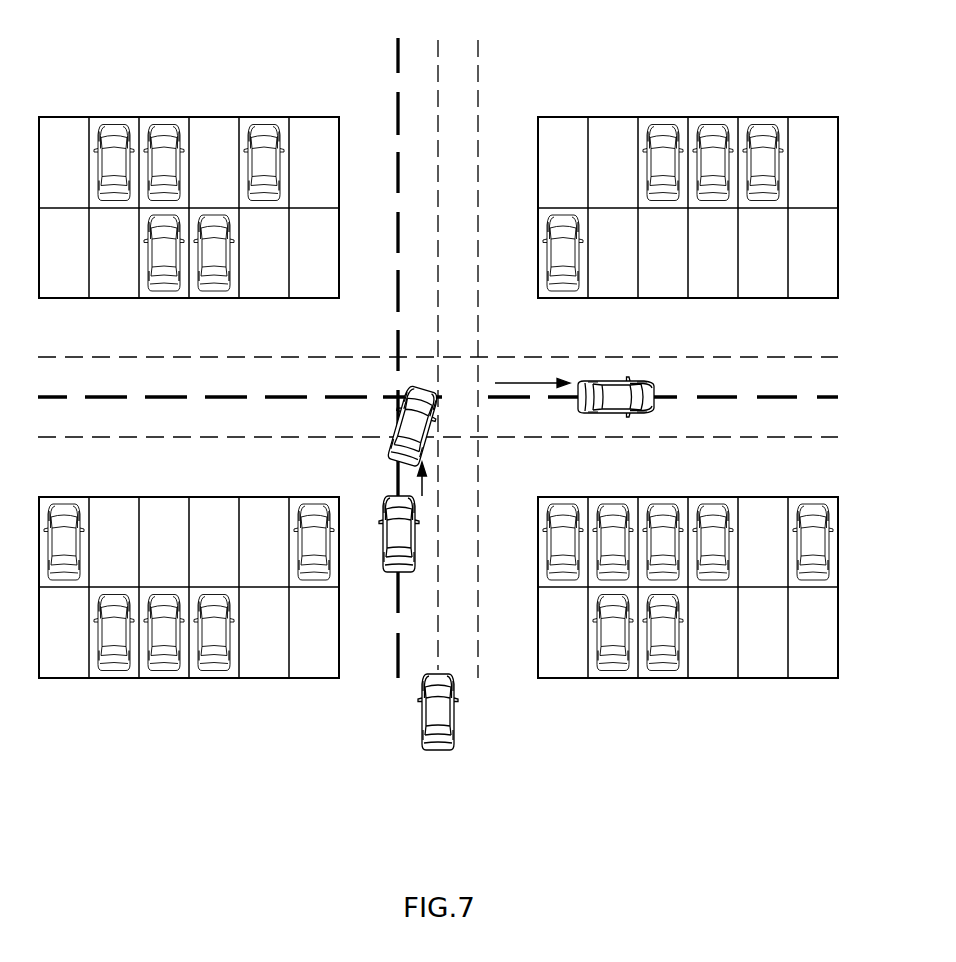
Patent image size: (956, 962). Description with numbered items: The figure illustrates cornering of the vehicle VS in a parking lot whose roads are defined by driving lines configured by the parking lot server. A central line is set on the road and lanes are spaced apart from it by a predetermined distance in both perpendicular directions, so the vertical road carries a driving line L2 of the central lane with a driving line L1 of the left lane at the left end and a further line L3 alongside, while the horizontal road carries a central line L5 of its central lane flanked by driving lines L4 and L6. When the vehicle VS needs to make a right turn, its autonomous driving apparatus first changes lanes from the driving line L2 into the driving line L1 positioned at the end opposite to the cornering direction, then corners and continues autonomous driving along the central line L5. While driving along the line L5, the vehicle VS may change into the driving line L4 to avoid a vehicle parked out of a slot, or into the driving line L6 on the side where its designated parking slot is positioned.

The vehicle VS is at (386, 451).
The driving line of a left lane L1 is at (397, 343).
The driving line of a central lane L2 is at (438, 339).
The lane line L3 is at (479, 343).
The driving line L4 is at (456, 358).
The central line of a central lane L5 is at (456, 398).
The driving line L6 is at (456, 438).